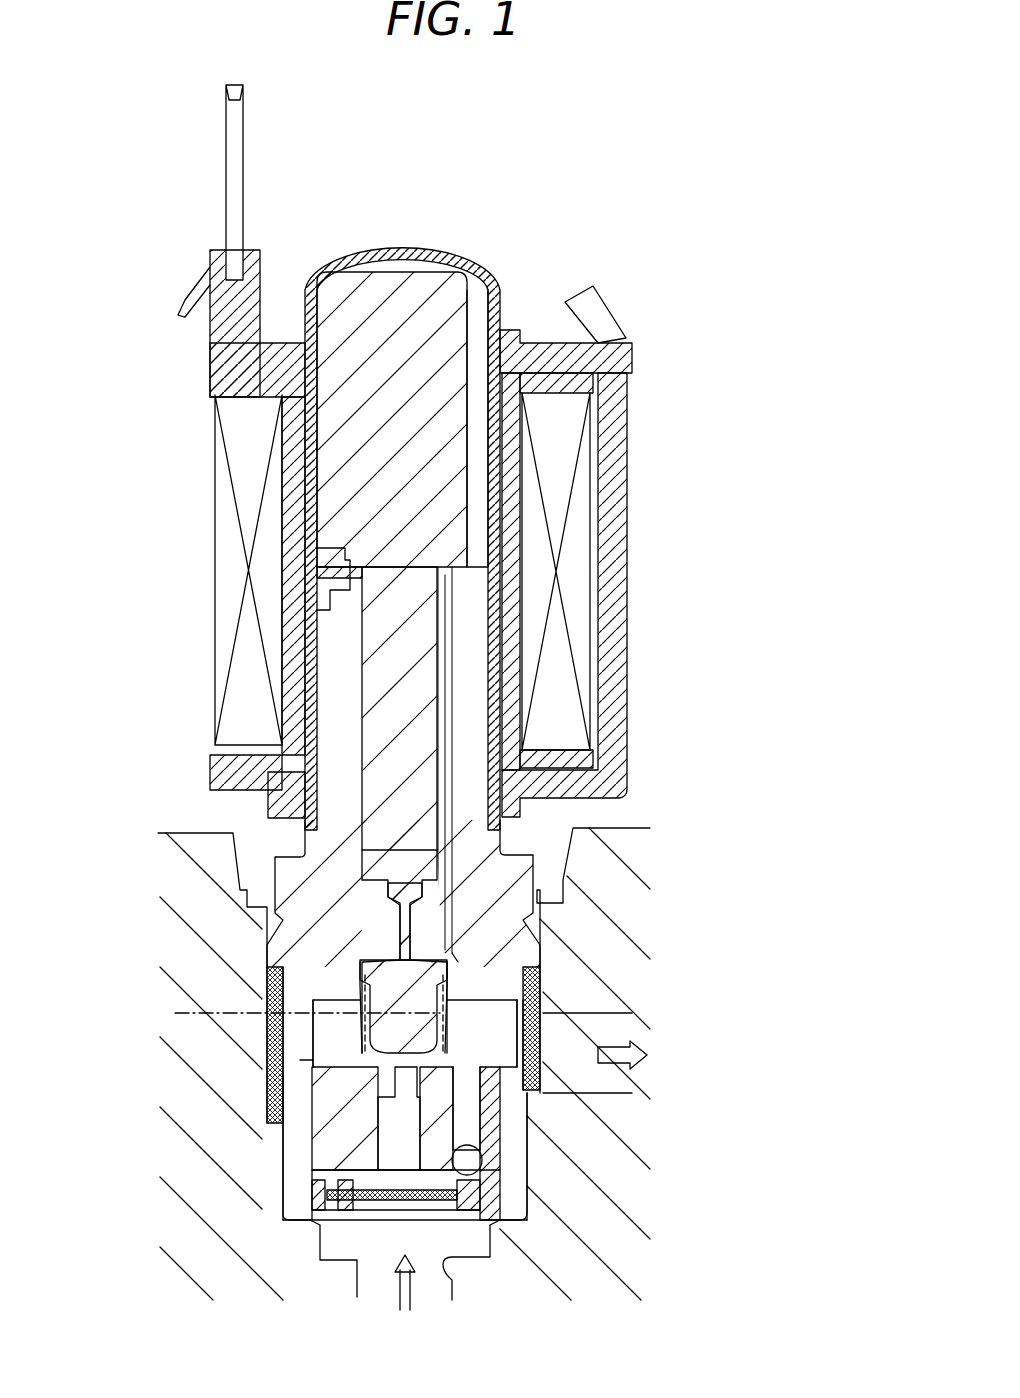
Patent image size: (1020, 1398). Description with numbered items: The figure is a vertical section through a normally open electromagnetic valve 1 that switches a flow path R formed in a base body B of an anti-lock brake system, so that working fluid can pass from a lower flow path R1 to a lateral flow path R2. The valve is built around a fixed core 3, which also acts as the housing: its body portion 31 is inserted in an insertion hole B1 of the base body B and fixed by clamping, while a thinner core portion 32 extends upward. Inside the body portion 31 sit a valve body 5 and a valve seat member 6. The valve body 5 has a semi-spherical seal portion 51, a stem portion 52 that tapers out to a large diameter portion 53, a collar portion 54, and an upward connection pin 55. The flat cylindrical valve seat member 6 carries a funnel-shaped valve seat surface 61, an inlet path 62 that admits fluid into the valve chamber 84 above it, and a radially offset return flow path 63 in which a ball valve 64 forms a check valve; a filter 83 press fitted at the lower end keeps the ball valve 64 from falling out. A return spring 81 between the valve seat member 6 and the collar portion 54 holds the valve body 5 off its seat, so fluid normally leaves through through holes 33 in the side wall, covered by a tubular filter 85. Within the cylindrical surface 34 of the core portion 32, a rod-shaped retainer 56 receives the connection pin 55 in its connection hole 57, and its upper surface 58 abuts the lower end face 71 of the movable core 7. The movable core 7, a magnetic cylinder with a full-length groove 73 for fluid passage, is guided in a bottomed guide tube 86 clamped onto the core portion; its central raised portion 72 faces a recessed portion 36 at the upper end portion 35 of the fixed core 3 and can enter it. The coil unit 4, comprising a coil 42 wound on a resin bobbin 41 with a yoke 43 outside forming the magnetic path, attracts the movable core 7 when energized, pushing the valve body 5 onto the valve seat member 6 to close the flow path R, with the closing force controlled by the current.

The normally open electromagnetic valve 1 is at (617, 210).
The fixed core 3 is at (448, 1069).
The coil unit 4 is at (640, 347).
The valve body 5 is at (543, 1013).
The valve seat member 6 is at (293, 1137).
The movable core 7 is at (426, 500).
The body portion 31 is at (510, 880).
The core portion 32 is at (490, 830).
The through holes 33 is at (513, 1023).
The cylindrical surface 34 is at (305, 740).
The upper end portion 35 is at (330, 590).
The recessed portion 36 is at (345, 562).
The bobbin 41 is at (590, 385).
The coil 42 is at (565, 430).
The yoke 43 is at (610, 390).
The seal portion 51 is at (345, 1055).
The stem portion 52 is at (330, 1035).
The large diameter portion 53 is at (275, 990).
The collar portion 54 is at (400, 925).
The connection pin 55 is at (405, 908).
The retainer 56 is at (395, 815).
The connection hole 57 is at (390, 880).
The upper surface 58 is at (360, 527).
The valve seat surface 61 is at (440, 1010).
The inlet path 62 is at (405, 1130).
The return flow path 63 is at (520, 1140).
The ball valve 64 is at (475, 1168).
The lower end face 71 is at (445, 585).
The raised portion 72 is at (480, 557).
The groove 73 is at (480, 455).
The return spring 81 is at (175, 1013).
The filter 83 is at (462, 1205).
The valve chamber 84 is at (490, 965).
The tubular filter 85 is at (530, 1050).
The guide tube 86 is at (408, 244).
The base body B is at (605, 820).
The insertion hole B1 is at (540, 925).
The flow path R is at (740, 1150).
The flow path R1 is at (530, 1262).
The flow path R2 is at (615, 1093).